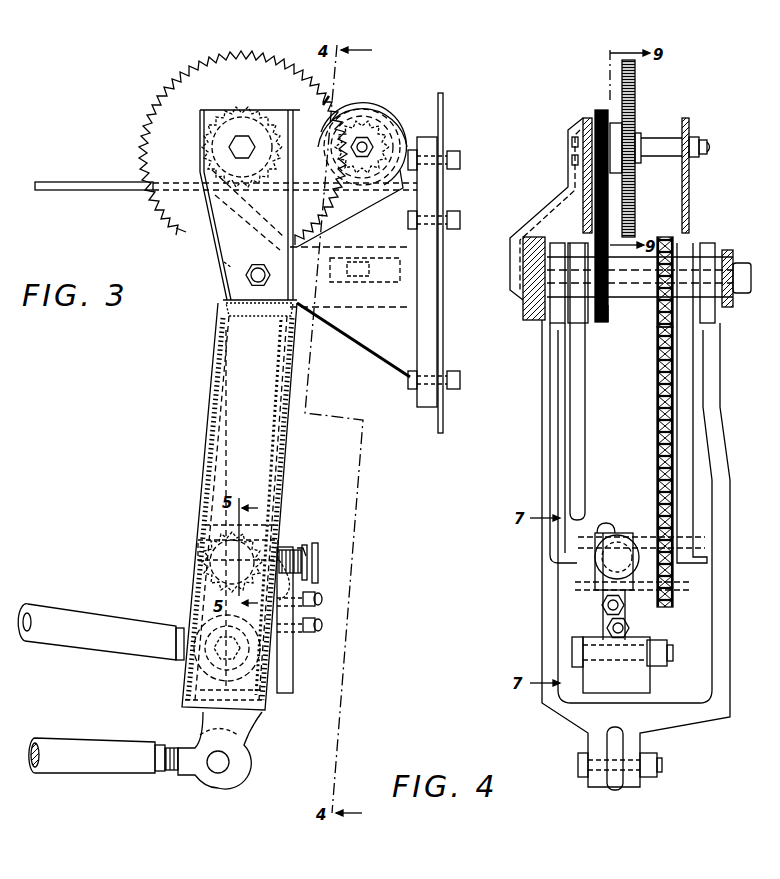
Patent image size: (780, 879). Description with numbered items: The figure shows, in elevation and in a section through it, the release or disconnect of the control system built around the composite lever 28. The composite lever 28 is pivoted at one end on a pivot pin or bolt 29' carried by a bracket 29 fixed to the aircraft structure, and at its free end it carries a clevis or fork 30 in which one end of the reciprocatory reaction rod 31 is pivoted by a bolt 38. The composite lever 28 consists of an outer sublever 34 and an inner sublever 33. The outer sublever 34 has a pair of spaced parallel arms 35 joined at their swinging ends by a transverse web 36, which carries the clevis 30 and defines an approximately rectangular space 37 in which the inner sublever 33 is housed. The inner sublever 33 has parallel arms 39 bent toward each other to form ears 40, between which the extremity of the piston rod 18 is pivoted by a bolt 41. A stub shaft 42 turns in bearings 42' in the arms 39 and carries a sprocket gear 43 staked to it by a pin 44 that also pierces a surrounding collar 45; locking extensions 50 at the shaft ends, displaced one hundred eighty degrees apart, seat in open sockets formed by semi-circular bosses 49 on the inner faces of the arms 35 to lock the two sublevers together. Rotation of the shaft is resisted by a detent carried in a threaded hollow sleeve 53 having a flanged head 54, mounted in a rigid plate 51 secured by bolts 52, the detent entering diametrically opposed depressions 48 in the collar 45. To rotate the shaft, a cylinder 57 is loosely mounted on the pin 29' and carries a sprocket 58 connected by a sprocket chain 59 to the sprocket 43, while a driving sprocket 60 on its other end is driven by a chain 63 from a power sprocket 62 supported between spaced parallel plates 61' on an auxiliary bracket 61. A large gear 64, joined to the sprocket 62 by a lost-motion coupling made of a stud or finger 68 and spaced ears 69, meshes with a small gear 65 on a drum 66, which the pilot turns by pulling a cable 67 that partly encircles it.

In FIG. 3, the piston rod 18 is at (100, 620).
In FIG. 4, the piston rod 18 is at (560, 651).
In FIG. 3, the composite lever 28 is at (205, 423).
In FIG. 4, the composite lever 28 is at (541, 437).
In FIG. 3, the bracket 29 is at (330, 263).
In FIG. 4, the bracket 29 is at (626, 275).
In FIG. 4, the pivot pin or bolt 29' is at (504, 278).
In FIG. 3, the clevis or fork 30 is at (236, 746).
In FIG. 4, the clevis or fork 30 is at (641, 750).
In FIG. 3, the reaction rod 31 is at (100, 765).
In FIG. 4, the reaction rod 31 is at (615, 790).
In FIG. 4, the inner sublever 33 is at (580, 393).
In FIG. 3, the outer sublever 34 is at (232, 452).
In FIG. 4, the outer sublever 34 is at (552, 463).
In FIG. 4, the arms 35 is at (545, 359).
In FIG. 4, the transverse web 36 is at (604, 710).
In FIG. 4, the rectangular space 37 is at (703, 493).
In FIG. 3, the bolt 38 is at (226, 775).
In FIG. 4, the bolt 38 is at (663, 769).
In FIG. 4, the arms 39 is at (683, 360).
In FIG. 3, the ears 40 is at (195, 692).
In FIG. 4, the ears 40 is at (640, 690).
In FIG. 3, the bolt 41 is at (184, 642).
In FIG. 4, the bolt 41 is at (673, 657).
In FIG. 3, the stub shaft 42 is at (218, 542).
In FIG. 4, the stub shaft 42 is at (602, 580).
In FIG. 4, the bearings 42' is at (618, 519).
In FIG. 3, the sprocket gear 43 is at (276, 527).
In FIG. 4, the sprocket gear 43 is at (672, 570).
In FIG. 3, the pin 44 is at (203, 528).
In FIG. 4, the pin 44 is at (641, 542).
In FIG. 4, the collar 45 is at (580, 546).
In FIG. 3, the depressions 48 is at (279, 556).
In FIG. 4, the semi-circular boss 49 is at (652, 541).
In FIG. 4, the locking extension or bolt 50 is at (700, 552).
In FIG. 3, the rigid plate 51 is at (302, 545).
In FIG. 4, the rigid plate 51 is at (602, 605).
In FIG. 3, the bolts 52 is at (315, 600).
In FIG. 4, the bolts 52 is at (607, 622).
In FIG. 3, the externally threaded hollow sleeve 53 is at (289, 613).
In FIG. 3, the flanged head 54 is at (321, 562).
In FIG. 4, the flanged head 54 is at (617, 557).
In FIG. 4, the cylinder 57 is at (630, 295).
In FIG. 4, the sprocket 58 is at (676, 245).
In FIG. 3, the sprocket chain 59 is at (212, 379).
In FIG. 4, the sprocket chain 59 is at (670, 412).
In FIG. 3, the driving sprocket 60 is at (217, 263).
In FIG. 4, the driving sprocket 60 is at (608, 318).
In FIG. 3, the auxiliary bracket 61 is at (243, 213).
In FIG. 4, the auxiliary bracket 61 is at (546, 209).
In FIG. 3, the spaced parallel plates 61' is at (344, 93).
In FIG. 4, the spaced parallel plates 61' is at (632, 170).
In FIG. 3, the power sprocket 62 is at (202, 142).
In FIG. 4, the power sprocket 62 is at (597, 112).
In FIG. 3, the chain 63 is at (190, 229).
In FIG. 4, the chain 63 is at (596, 225).
In FIG. 3, the large gear 64 is at (168, 106).
In FIG. 4, the large gear 64 is at (636, 102).
In FIG. 3, the small gear 65 is at (400, 124).
In FIG. 3, the drum 66 is at (371, 113).
In FIG. 3, the cable 67 is at (78, 185).
In FIG. 4, the stud or finger 68 is at (641, 146).
In FIG. 4, the spaced ears 69 is at (635, 123).